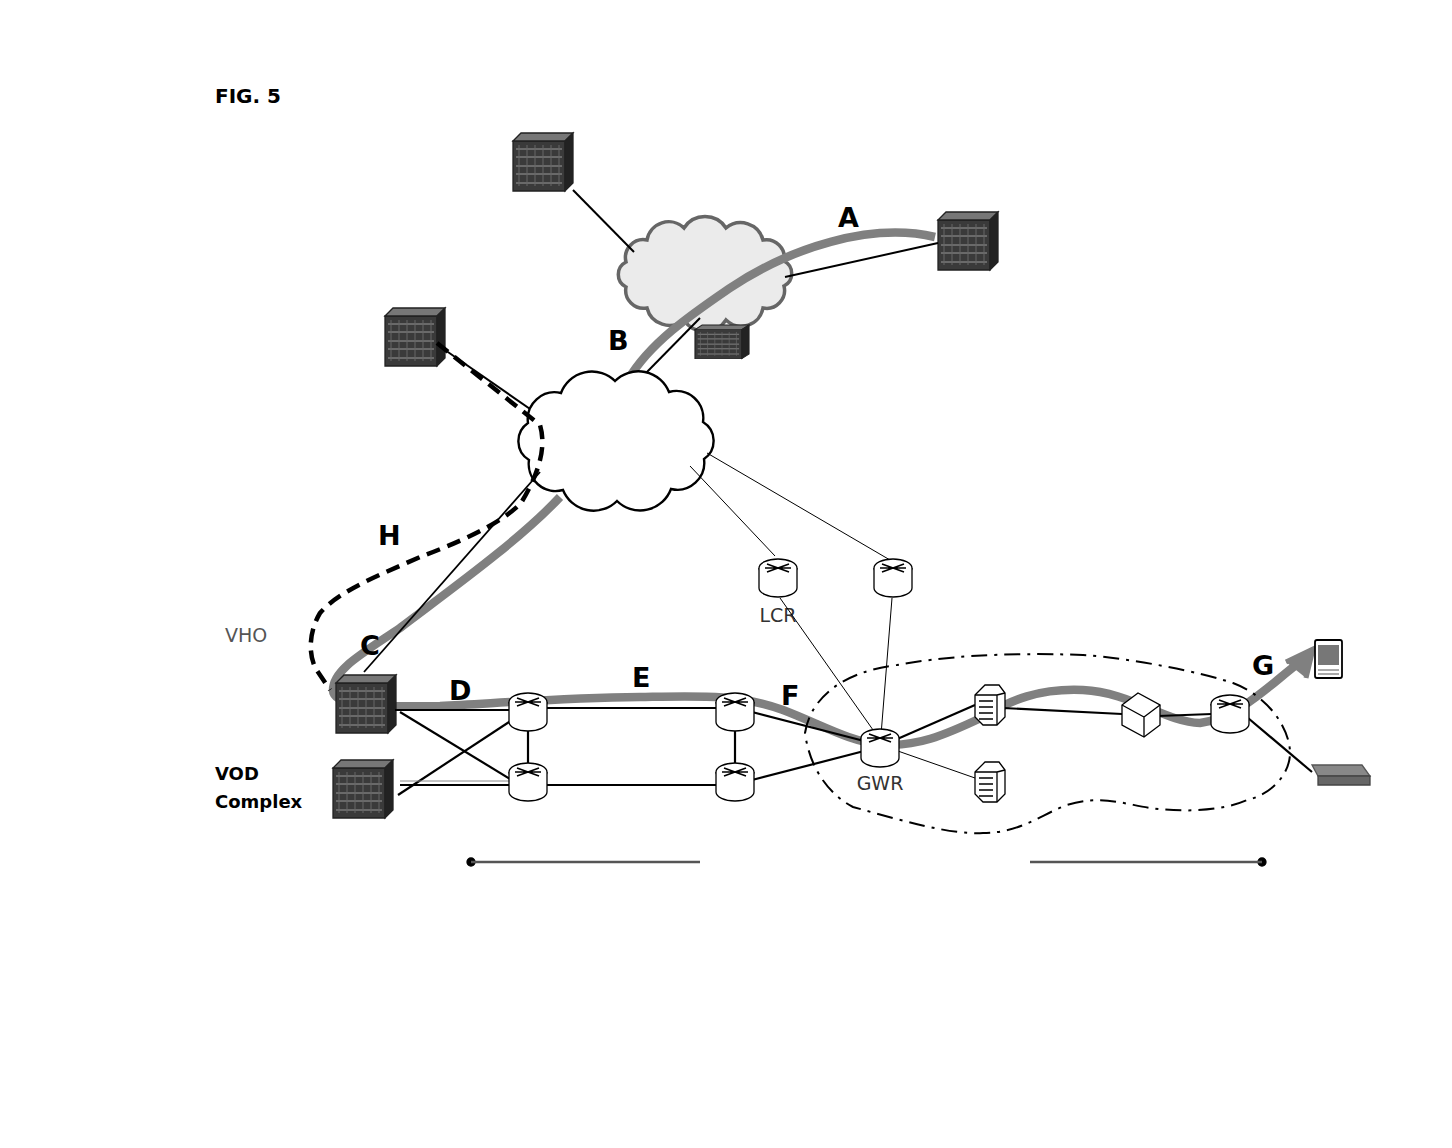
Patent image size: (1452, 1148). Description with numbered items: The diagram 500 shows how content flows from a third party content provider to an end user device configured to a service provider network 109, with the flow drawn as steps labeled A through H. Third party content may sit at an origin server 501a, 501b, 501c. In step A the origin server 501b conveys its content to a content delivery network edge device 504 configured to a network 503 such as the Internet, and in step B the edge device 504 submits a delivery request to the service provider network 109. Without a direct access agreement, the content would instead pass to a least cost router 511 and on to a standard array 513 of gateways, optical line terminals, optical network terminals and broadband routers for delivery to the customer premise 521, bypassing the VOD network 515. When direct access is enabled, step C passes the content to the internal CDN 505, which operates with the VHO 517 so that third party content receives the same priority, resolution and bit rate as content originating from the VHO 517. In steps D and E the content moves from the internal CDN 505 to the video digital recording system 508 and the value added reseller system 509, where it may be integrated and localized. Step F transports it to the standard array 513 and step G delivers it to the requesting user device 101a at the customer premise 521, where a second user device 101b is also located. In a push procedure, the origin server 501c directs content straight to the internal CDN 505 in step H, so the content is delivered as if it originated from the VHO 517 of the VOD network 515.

The data flow diagram 500 is at (244, 125).
The origin server 501a is at (541, 134).
The origin server 501b is at (1010, 234).
The origin server 501c is at (407, 297).
The network 503 is at (717, 220).
The content delivery network (CDN) edge device 504 is at (877, 388).
The service provider network 109 is at (615, 440).
The internal CDN 505 is at (403, 688).
The video digital recording (VDR) system 508 is at (562, 822).
The value added reseller system 509 is at (764, 822).
The least cost router (LCR) 511 is at (898, 548).
The standard array 513 is at (1080, 641).
The VOD network 515 is at (838, 875).
The VHO 517 is at (386, 894).
The customer premise 521 is at (1296, 885).
The user device 101a is at (1353, 676).
The user device 101b is at (1352, 791).